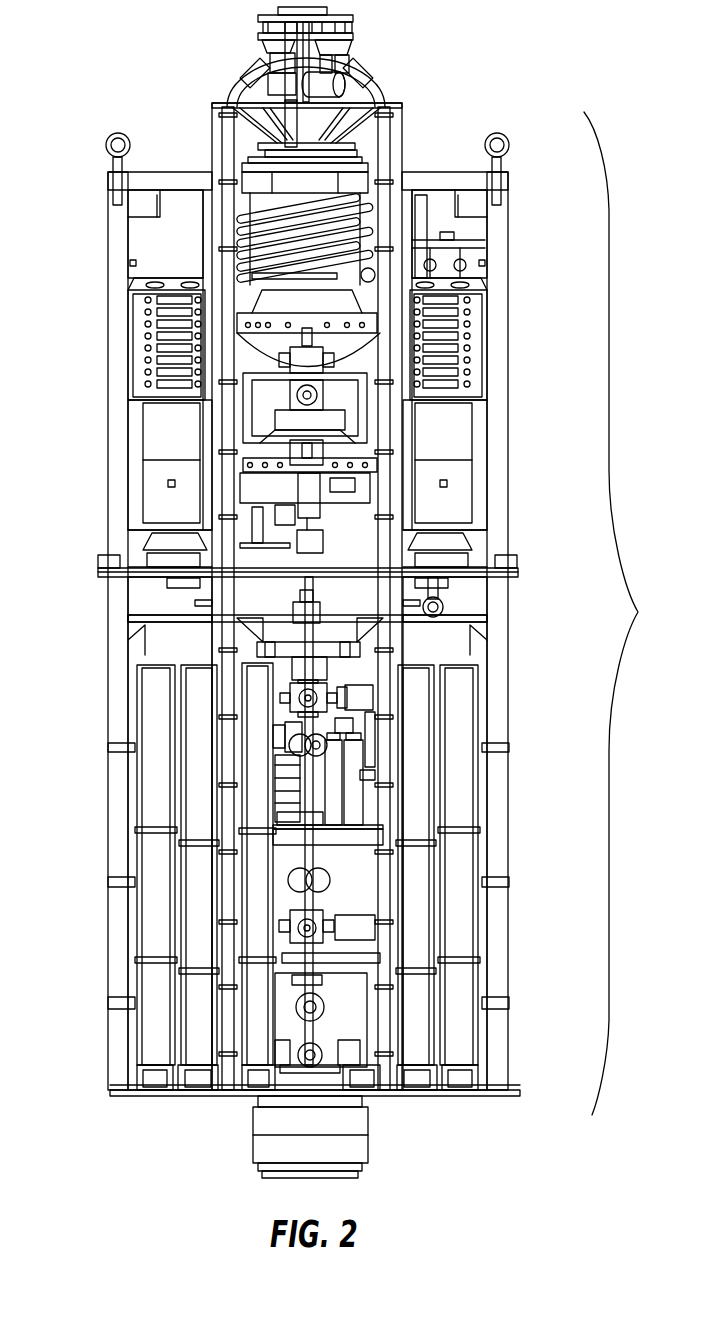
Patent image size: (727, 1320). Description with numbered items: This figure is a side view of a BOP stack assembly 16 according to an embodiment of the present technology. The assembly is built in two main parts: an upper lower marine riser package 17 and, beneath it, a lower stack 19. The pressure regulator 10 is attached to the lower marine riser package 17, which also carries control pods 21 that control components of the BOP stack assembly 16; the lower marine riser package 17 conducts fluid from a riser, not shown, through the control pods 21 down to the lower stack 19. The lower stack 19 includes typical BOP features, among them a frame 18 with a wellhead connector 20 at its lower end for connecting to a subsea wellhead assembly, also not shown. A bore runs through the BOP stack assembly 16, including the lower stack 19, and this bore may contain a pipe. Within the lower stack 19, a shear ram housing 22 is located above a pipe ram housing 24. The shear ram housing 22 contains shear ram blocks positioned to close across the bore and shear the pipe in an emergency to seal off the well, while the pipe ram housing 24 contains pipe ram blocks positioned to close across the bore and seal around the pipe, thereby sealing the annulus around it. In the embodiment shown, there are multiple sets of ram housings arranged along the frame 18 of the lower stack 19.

The pressure regulator 10 is at (137, 523).
The BOP stack assembly 16 is at (628, 613).
The lower marine riser package 17 is at (100, 370).
The frame 18 is at (497, 372).
The lower stack 19 is at (100, 942).
The wellhead connector 20 is at (270, 1123).
The control pods 21 is at (157, 497).
The shear ram housing 22 is at (268, 698).
The pipe ram housing 24 is at (258, 743).